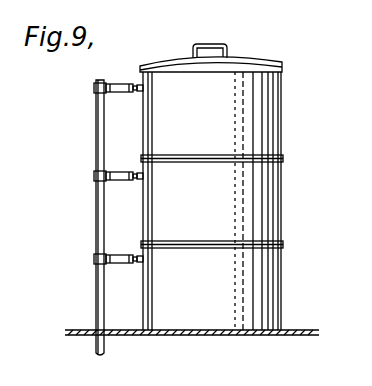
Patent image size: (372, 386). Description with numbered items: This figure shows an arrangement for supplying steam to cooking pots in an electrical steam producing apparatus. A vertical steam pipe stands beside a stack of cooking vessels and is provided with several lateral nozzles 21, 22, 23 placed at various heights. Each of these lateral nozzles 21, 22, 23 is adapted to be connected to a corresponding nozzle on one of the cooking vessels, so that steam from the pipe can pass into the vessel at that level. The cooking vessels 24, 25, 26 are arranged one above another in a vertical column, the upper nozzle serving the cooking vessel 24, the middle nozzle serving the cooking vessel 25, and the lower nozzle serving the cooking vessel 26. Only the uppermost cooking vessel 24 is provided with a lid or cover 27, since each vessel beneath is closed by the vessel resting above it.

The lateral nozzle 21 is at (106, 84).
The lateral nozzle 22 is at (106, 172).
The lateral nozzle 23 is at (106, 255).
The cooking vessel 24 is at (212, 201).
The cooking vessel 25 is at (212, 187).
The cooking vessel 26 is at (212, 272).
The lid or cover 27 is at (250, 58).